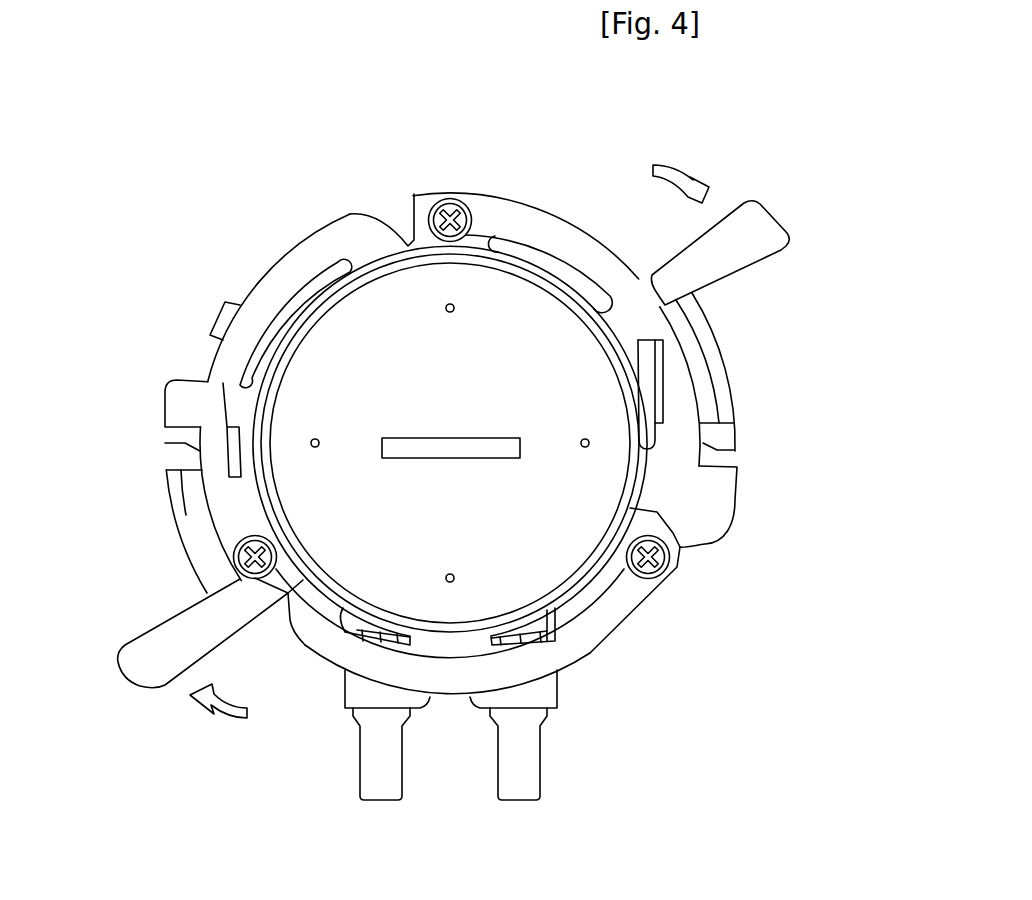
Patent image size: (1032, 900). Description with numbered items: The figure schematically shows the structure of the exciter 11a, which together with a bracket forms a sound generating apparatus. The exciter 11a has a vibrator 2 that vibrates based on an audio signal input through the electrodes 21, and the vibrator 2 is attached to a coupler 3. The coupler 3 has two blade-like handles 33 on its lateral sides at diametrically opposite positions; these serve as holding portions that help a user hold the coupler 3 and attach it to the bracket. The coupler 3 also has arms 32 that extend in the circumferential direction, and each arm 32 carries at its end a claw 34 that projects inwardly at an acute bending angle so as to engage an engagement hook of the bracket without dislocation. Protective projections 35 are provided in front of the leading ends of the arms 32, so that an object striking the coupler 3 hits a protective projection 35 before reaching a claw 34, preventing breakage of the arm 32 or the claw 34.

The exciter 11a is at (237, 188).
The vibrator 2 is at (488, 352).
The coupler 3 is at (312, 672).
The electrodes 21 is at (385, 775).
The arms 32 is at (722, 385).
The handles 33 is at (757, 233).
The claw 34 is at (720, 446).
The protective projections 35 is at (710, 512).